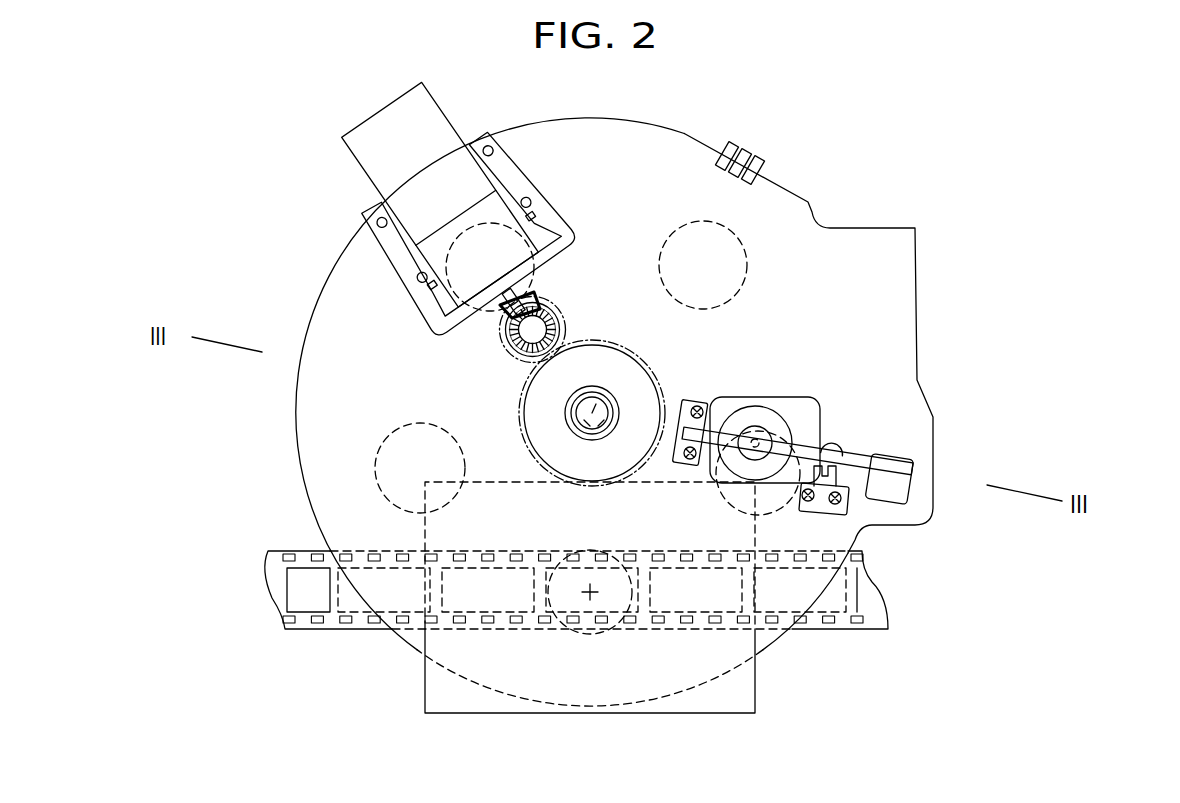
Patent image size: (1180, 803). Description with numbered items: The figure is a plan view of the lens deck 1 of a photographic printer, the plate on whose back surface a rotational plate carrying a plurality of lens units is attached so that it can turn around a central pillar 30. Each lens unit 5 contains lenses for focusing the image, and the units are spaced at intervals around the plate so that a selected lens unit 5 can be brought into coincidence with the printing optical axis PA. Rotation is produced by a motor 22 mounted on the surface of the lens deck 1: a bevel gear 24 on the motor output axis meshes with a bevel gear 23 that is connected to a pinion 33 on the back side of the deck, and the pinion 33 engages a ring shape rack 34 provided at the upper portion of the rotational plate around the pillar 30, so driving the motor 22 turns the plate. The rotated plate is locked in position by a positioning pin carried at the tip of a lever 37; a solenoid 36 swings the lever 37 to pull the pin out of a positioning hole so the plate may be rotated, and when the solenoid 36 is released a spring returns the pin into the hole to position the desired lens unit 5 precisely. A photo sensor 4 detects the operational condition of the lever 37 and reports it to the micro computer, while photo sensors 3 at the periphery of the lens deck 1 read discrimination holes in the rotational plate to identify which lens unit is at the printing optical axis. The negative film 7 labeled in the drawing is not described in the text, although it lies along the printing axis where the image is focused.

The lens deck 1 is at (648, 122).
The photo sensors 3 is at (759, 160).
The photo sensor 4 is at (812, 510).
The lens unit 5 is at (534, 658).
The negative film 7 is at (884, 583).
The motor 22 is at (440, 122).
The bevel gear 23 is at (560, 304).
The bevel gear 24 is at (497, 324).
The pillar 30 is at (600, 398).
The pinion 33 is at (568, 316).
The ring shape rack 34 is at (543, 462).
The solenoid 36 is at (768, 413).
The lever 37 is at (853, 458).